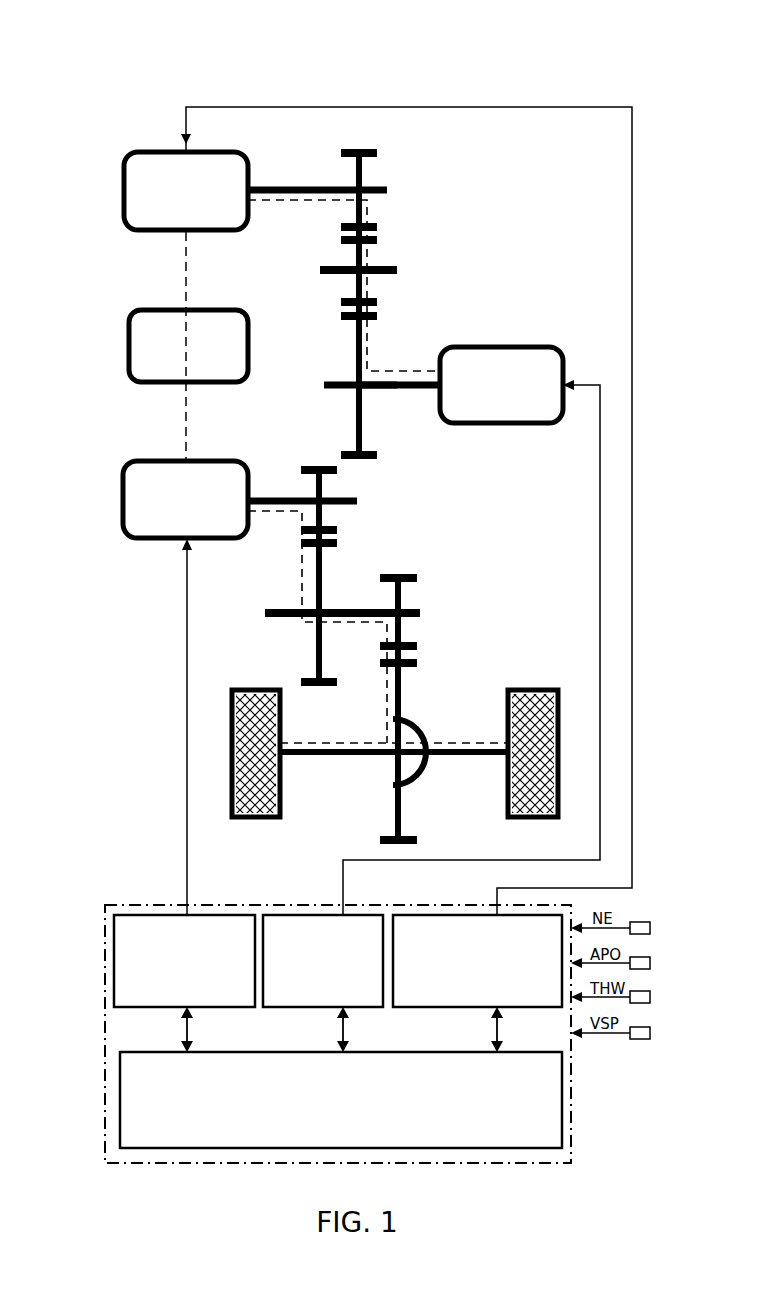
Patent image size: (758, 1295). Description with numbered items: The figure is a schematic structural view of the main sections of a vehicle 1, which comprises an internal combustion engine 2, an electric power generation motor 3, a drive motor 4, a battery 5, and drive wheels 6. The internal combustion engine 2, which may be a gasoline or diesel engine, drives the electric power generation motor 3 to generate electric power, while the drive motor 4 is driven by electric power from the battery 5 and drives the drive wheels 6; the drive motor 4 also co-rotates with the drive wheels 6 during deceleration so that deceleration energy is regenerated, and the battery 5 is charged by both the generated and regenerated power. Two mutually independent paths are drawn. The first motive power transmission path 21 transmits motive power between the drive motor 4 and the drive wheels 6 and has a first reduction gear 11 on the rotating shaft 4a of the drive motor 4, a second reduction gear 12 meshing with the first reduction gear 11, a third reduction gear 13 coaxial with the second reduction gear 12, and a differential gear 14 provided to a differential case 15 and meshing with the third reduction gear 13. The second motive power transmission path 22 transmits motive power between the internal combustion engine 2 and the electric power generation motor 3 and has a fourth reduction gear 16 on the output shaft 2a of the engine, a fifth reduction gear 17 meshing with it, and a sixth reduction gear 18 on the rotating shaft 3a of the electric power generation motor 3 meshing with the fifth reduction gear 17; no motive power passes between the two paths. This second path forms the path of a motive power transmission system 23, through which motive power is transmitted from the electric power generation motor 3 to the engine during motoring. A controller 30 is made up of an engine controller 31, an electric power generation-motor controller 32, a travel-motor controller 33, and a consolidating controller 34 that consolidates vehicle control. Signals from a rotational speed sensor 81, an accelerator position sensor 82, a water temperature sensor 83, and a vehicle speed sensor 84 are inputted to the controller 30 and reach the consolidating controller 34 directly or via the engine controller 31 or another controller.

The vehicle 1 is at (84, 80).
The internal combustion engine 2 is at (518, 345).
The output shaft 2a is at (380, 392).
The electric power generation motor 3 is at (160, 150).
The rotating shaft 3a is at (312, 186).
The drive motor 4 is at (170, 540).
The rotating shaft 4a is at (282, 498).
The battery 5 is at (160, 308).
The drive wheels 6 is at (255, 688).
The first reduction gear 11 is at (330, 512).
The second reduction gear 12 is at (322, 566).
The third reduction gear 13 is at (404, 588).
The differential gear 14 is at (404, 700).
The differential case 15 is at (425, 732).
The fourth reduction gear 16 is at (352, 406).
The fifth reduction gear 17 is at (320, 278).
The sixth reduction gear 18 is at (372, 170).
The first motive power transmission path 21 is at (385, 716).
The second motive power transmission path 22 is at (368, 250).
The motive power transmission system 23 is at (452, 209).
The controller 30 is at (112, 905).
The engine controller 31 is at (308, 914).
The electric power generation-motor controller 32 is at (468, 914).
The travel-motor controller 33 is at (152, 914).
The consolidating controller 34 is at (564, 1097).
The rotational speed sensor 81 is at (650, 928).
The accelerator position sensor 82 is at (650, 963).
The water temperature sensor 83 is at (650, 997).
The vehicle speed sensor 84 is at (650, 1033).